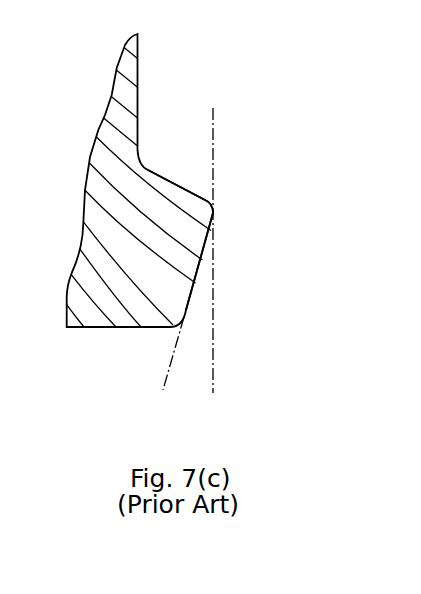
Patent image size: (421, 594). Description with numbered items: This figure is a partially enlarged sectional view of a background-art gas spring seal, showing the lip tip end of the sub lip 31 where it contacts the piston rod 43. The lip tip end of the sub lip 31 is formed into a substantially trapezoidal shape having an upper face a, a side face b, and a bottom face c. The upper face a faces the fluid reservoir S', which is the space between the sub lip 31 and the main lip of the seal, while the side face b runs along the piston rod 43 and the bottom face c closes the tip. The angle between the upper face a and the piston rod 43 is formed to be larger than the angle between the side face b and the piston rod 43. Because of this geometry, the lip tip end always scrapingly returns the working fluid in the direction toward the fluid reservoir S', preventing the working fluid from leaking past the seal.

The sub lip 31 is at (187, 269).
The piston rod 43 is at (213, 120).
The fluid reservoir S' is at (212, 178).
The upper face a is at (206, 196).
The side face b is at (187, 302).
The bottom face c is at (97, 328).